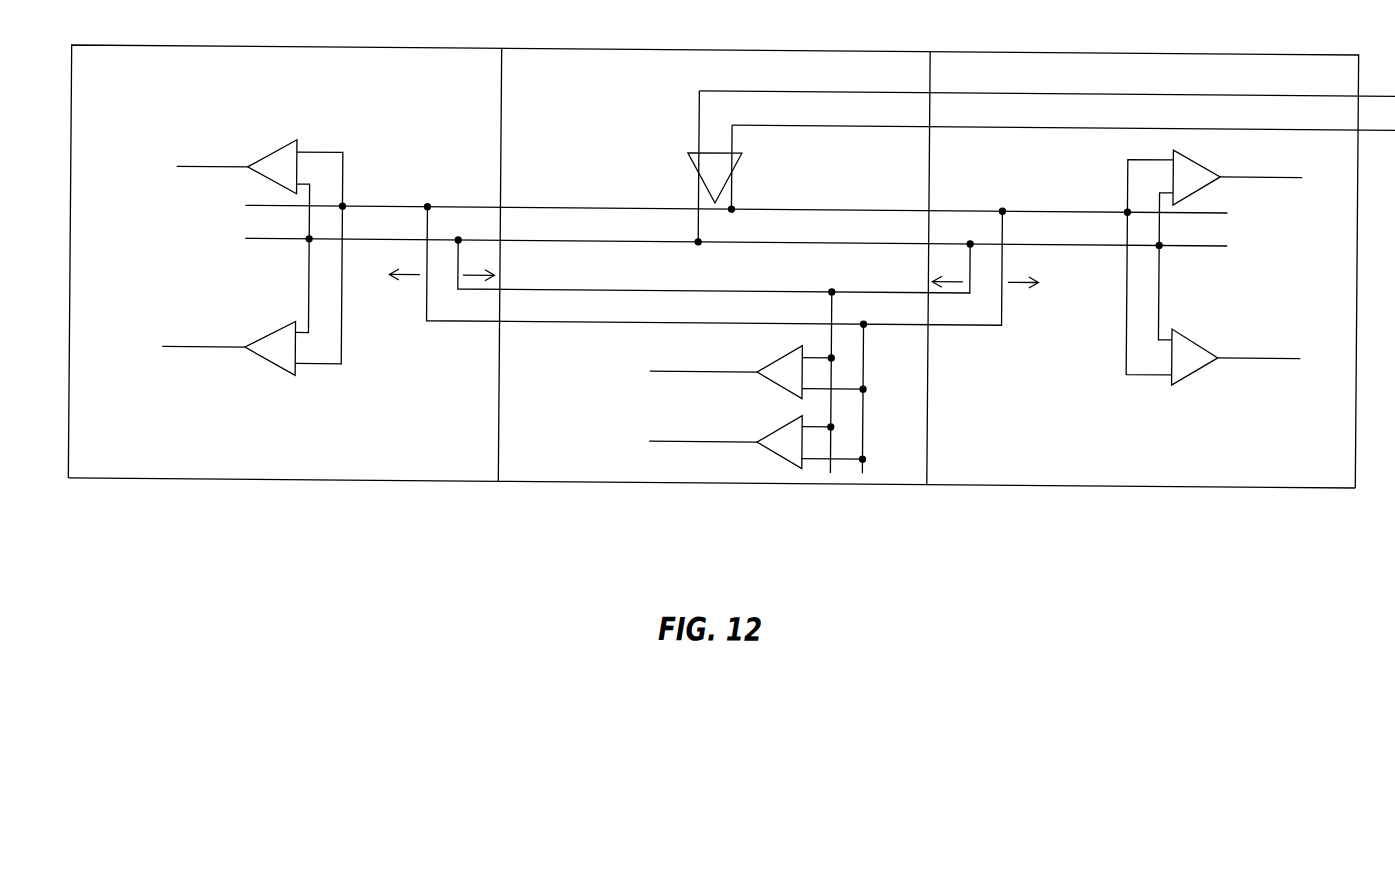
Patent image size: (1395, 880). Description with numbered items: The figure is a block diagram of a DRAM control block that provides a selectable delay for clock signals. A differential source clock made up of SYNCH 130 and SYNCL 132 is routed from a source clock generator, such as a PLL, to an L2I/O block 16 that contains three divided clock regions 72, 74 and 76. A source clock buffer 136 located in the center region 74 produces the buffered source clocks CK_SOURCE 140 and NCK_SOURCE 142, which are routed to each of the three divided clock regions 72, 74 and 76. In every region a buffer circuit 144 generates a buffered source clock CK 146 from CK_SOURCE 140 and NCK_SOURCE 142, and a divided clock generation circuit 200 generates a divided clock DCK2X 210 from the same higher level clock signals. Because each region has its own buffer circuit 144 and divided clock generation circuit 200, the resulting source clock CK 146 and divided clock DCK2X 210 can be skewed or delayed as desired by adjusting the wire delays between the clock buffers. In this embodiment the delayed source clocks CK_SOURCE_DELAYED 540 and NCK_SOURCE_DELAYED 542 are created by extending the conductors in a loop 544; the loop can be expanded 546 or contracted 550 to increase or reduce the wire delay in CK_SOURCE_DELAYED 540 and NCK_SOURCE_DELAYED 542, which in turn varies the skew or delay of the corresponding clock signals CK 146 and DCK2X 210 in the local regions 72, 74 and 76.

The L2I/O block 16 is at (294, 530).
The divided clock region 72 is at (152, 483).
The center divided clock region 74 is at (584, 483).
The divided clock region 76 is at (1012, 485).
The SYNCH 130 is at (1019, 90).
The SYNCL 132 is at (1021, 128).
The source clock buffer 136 is at (692, 165).
The CK_SOURCE 140 is at (1085, 245).
The NCK_SOURCE 142 is at (1086, 210).
The buffer circuit 144 is at (272, 156).
The source clock CK 146 is at (176, 171).
The divided clock generation circuit 200 is at (273, 368).
The divided clock DCK2X 210 is at (176, 352).
The CK_SOURCE_DELAYED 540 is at (907, 292).
The NCK_SOURCE_DELAYED 542 is at (908, 326).
The loop 544 is at (578, 333).
The loop expansion 546 is at (413, 281).
The loop contraction 550 is at (472, 281).